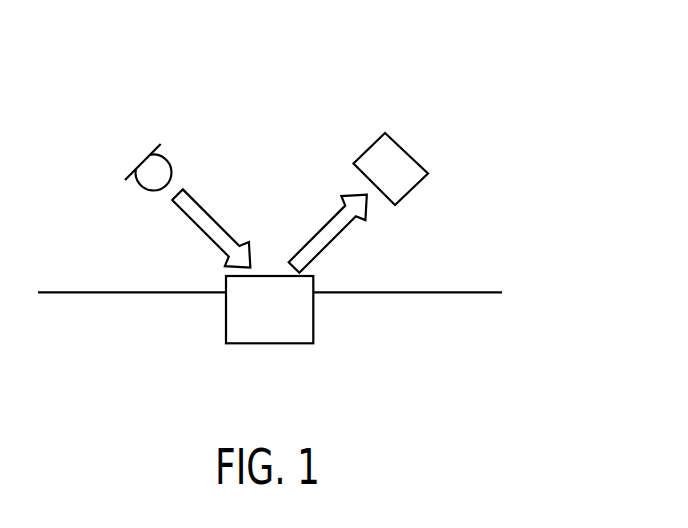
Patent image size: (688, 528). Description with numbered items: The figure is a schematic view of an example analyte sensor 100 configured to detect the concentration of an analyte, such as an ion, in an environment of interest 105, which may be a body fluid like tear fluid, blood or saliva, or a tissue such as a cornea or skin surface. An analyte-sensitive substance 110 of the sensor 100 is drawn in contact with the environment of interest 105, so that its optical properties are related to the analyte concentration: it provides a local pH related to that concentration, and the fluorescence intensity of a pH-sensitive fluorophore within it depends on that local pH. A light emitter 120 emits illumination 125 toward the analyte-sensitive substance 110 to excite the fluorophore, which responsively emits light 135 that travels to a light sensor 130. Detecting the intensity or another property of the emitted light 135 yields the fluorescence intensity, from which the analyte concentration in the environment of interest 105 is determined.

The sensor 100 is at (440, 114).
The environment of interest 105 is at (284, 396).
The analyte-sensitive substance 110 is at (242, 310).
The light emitter 120 is at (170, 156).
The illumination 125 is at (215, 217).
The light sensor 130 is at (415, 187).
The emitted light 135 is at (332, 240).